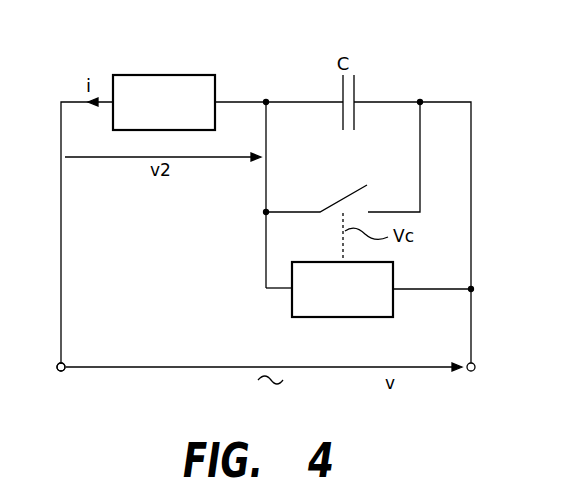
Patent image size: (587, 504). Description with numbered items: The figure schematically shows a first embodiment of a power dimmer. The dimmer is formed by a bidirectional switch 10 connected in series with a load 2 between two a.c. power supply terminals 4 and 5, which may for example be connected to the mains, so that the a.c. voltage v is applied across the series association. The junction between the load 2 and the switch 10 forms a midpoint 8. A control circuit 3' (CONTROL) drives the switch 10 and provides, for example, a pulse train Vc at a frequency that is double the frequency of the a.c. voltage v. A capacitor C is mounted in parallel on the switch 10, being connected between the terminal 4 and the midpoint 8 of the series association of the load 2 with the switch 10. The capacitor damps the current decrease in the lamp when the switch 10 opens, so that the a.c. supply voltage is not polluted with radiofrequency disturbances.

The load 2 is at (163, 75).
The midpoint 8 is at (266, 100).
The bidirectional switch 10 is at (347, 195).
The control circuit 3' is at (361, 309).
The a.c. power supply terminal 5 is at (57, 371).
The a.c. power supply terminal 4 is at (476, 366).